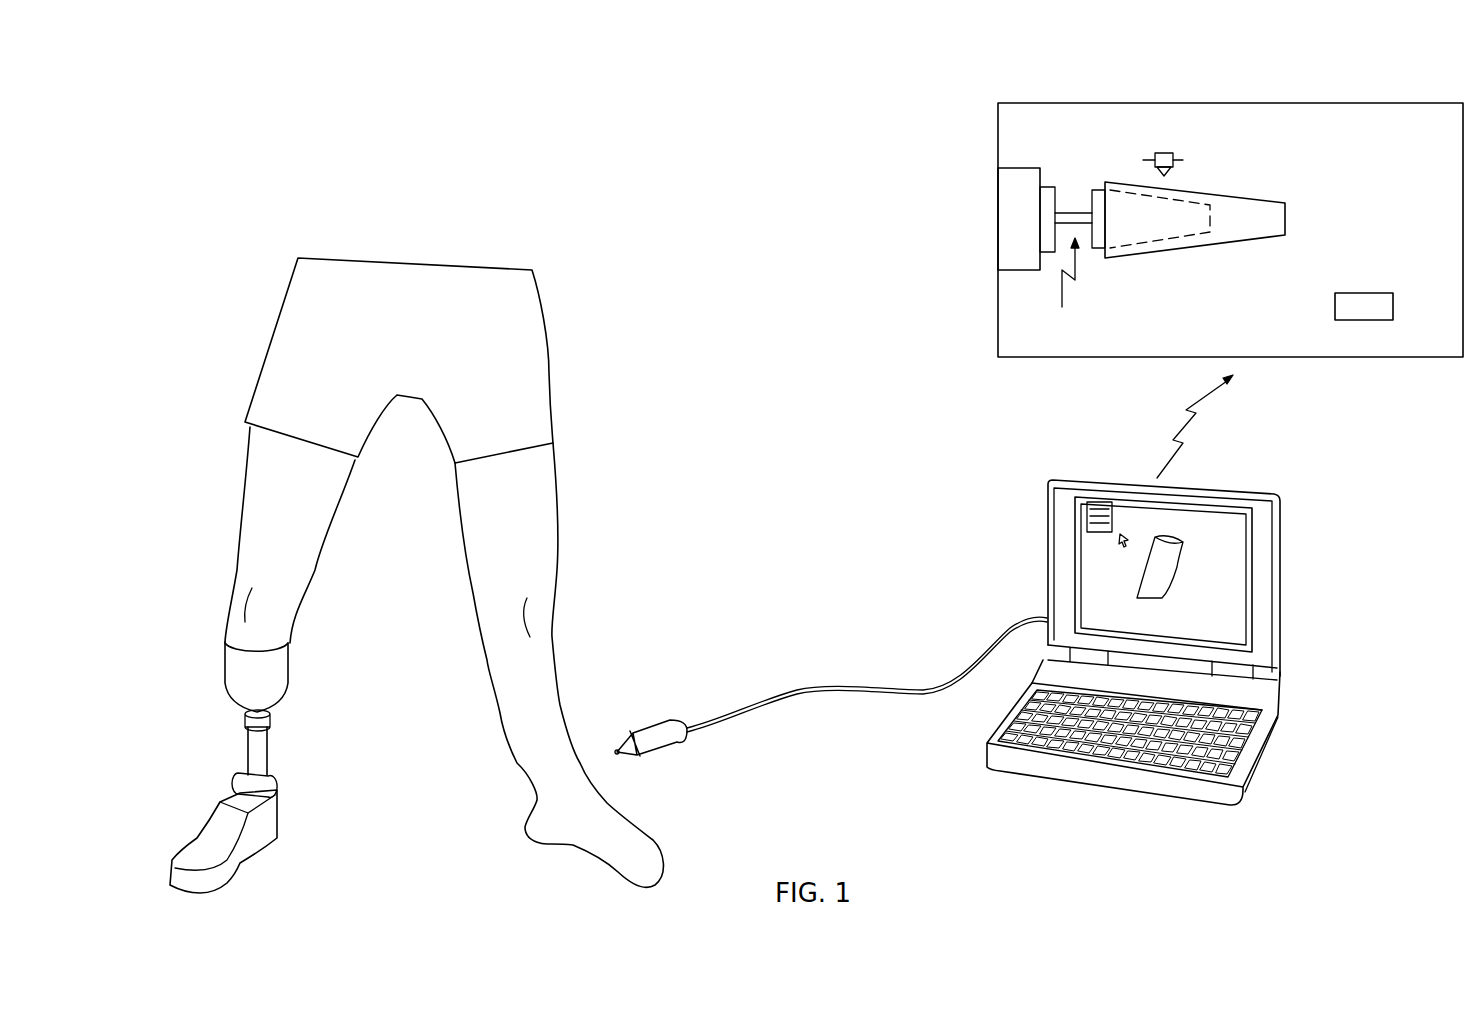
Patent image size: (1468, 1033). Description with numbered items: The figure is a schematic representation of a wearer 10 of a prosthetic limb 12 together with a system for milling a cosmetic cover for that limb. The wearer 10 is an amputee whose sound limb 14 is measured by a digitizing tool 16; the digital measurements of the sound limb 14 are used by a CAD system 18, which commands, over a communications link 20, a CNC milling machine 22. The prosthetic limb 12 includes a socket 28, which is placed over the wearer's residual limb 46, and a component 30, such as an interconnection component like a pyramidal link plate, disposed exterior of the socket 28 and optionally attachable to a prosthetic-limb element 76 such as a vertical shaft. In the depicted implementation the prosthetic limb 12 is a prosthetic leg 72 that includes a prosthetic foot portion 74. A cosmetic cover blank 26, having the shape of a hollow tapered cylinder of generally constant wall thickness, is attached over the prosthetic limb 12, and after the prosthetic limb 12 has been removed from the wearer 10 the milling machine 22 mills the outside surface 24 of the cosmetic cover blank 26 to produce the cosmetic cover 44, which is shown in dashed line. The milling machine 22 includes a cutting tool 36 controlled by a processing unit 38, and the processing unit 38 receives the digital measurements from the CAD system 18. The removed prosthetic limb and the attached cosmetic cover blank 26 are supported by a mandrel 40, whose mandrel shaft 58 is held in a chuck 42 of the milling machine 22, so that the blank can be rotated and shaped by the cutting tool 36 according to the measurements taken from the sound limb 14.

The wearer 10 is at (243, 312).
The prosthetic limb 12 is at (225, 733).
The sound limb 14 is at (548, 493).
The digitizing tool 16 is at (652, 718).
The CAD system 18 is at (1267, 720).
The communications link 20 is at (1200, 428).
The CNC milling machine 22 is at (1215, 92).
The outside surface 24 is at (1252, 195).
The cosmetic cover blank 26 is at (1225, 238).
The socket 28 is at (282, 680).
The component 30 is at (272, 720).
The cutting tool 36 is at (1153, 158).
The processing unit 38 is at (1363, 297).
The mandrel 40 is at (1062, 289).
The chuck 42 is at (1048, 187).
The cosmetic cover 44 is at (1142, 245).
The residual limb 46 is at (248, 508).
The mandrel shaft 58 is at (1087, 212).
The prosthetic leg 72 is at (285, 768).
The prosthetic foot portion 74 is at (260, 837).
The prosthetic-limb element 76 is at (252, 757).